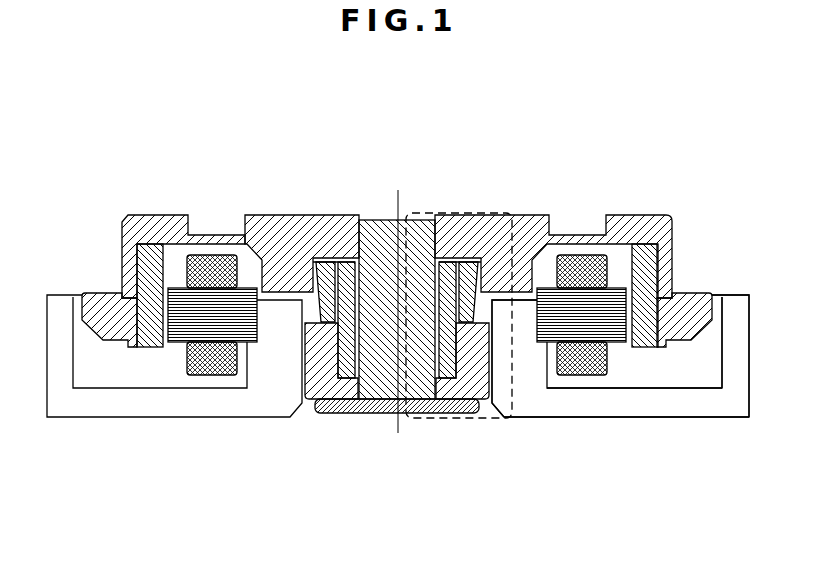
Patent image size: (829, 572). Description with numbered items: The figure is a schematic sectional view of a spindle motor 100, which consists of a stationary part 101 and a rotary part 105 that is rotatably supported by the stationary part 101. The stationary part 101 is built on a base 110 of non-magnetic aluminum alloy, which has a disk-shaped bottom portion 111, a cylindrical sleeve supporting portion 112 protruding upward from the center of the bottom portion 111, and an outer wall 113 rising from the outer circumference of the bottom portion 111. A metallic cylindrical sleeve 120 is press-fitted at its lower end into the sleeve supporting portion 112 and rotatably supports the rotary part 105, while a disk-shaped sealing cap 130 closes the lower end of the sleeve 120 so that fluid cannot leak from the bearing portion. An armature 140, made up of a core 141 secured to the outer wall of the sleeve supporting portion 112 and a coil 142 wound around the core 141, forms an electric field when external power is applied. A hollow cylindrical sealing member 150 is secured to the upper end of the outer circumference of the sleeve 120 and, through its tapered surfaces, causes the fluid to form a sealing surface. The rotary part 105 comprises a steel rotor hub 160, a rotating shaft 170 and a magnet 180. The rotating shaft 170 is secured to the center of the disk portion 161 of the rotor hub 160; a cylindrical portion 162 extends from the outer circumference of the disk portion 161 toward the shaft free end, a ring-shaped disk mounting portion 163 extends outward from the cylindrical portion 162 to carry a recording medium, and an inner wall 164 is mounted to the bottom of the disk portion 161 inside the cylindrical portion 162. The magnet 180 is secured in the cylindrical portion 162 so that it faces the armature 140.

The spindle motor 100 is at (157, 86).
The stationary part 101 is at (83, 482).
The rotary part 105 is at (717, 155).
The base 110 is at (88, 419).
The bottom portion 111 is at (689, 403).
The sleeve supporting portion 112 is at (522, 372).
The outer wall 113 is at (733, 368).
The sleeve 120 is at (308, 416).
The sealing cap 130 is at (391, 414).
The armature 140 is at (185, 365).
The core 141 is at (616, 335).
The coil 142 is at (585, 375).
The sealing member 150 is at (310, 312).
The rotor hub 160 is at (300, 214).
The disk portion 161 is at (468, 218).
The cylindrical portion 162 is at (153, 244).
The disk mounting portion 163 is at (93, 300).
The inner wall 164 is at (517, 213).
The rotating shaft 170 is at (388, 219).
The magnet 180 is at (627, 252).